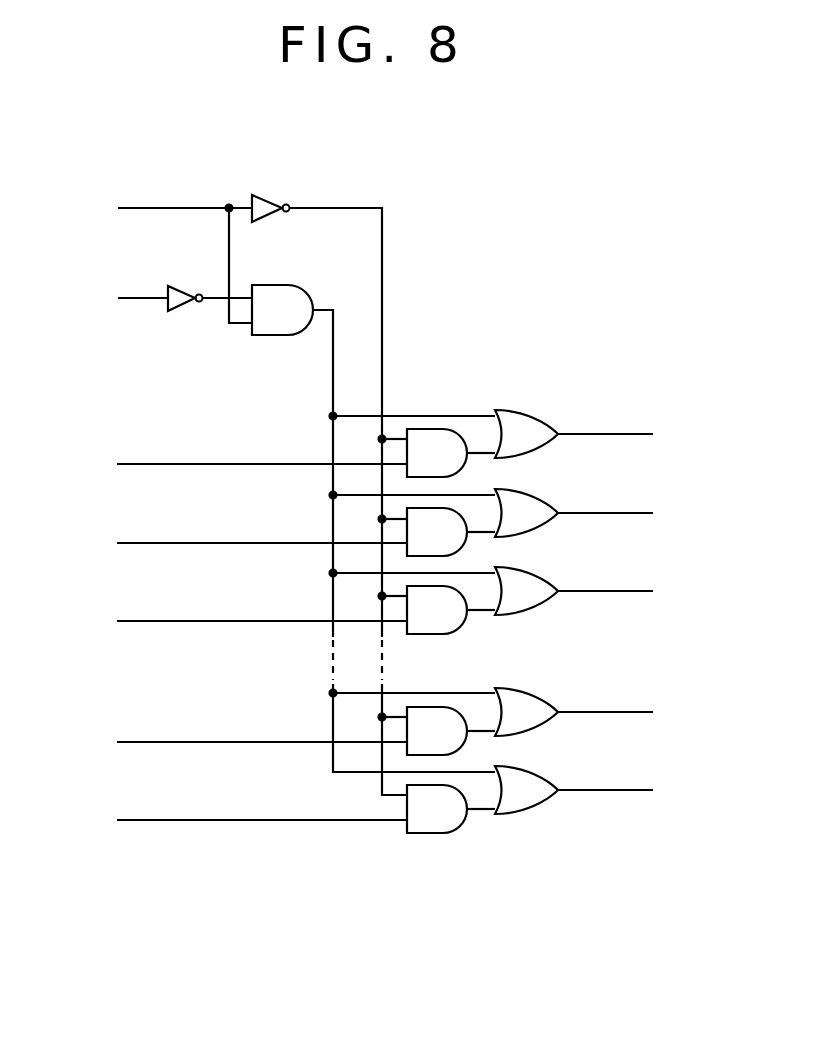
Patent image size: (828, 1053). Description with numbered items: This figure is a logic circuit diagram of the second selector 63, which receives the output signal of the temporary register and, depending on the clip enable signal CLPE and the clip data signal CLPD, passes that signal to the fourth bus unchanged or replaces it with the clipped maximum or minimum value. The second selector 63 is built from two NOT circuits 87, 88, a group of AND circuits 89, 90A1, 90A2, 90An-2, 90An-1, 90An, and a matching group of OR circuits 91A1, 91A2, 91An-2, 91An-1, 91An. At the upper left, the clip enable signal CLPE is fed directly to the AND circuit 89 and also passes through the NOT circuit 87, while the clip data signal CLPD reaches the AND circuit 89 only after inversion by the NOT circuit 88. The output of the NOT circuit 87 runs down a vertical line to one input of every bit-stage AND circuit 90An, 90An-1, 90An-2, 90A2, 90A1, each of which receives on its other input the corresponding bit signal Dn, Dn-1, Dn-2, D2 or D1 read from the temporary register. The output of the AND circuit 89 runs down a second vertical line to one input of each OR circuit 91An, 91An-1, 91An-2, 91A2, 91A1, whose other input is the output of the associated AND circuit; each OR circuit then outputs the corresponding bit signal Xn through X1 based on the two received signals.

The second selector 63 is at (486, 296).
The NOT circuit 87 is at (273, 195).
The NOT circuit 88 is at (192, 310).
The AND circuit 89 is at (313, 292).
The AND circuit 90An is at (438, 428).
The AND circuit 90An-1 is at (407, 531).
The AND circuit 90An-2 is at (407, 607).
The AND circuit 90A2 is at (436, 707).
The AND circuit 90A1 is at (425, 834).
The OR circuit 91An is at (548, 411).
The OR circuit 91An-1 is at (548, 490).
The OR circuit 91An-2 is at (548, 568).
The OR circuit 91A2 is at (548, 689).
The OR circuit 91A1 is at (555, 785).